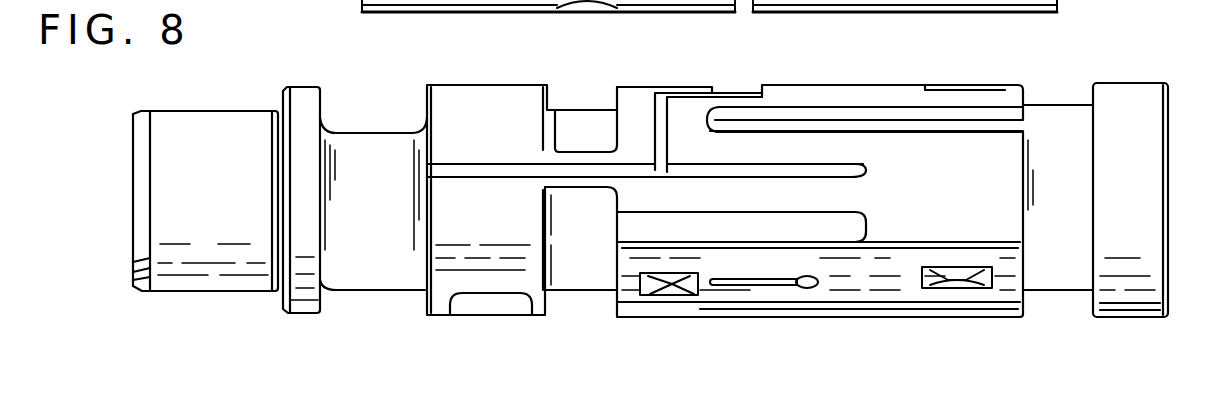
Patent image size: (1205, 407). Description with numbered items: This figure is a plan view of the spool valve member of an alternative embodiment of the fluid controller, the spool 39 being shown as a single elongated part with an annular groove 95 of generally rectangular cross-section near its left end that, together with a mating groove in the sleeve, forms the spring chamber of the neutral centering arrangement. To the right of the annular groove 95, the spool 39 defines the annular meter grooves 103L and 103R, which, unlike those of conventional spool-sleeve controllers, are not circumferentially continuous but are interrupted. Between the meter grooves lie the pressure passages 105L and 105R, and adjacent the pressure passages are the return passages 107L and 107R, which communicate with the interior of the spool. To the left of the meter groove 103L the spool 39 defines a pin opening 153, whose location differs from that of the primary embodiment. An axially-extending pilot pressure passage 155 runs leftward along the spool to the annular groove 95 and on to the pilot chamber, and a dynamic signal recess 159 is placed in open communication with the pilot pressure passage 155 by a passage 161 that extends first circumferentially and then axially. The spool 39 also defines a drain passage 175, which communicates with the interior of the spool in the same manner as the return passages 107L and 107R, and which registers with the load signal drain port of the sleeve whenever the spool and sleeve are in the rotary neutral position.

The spool 39 is at (356, 73).
The annular groove 95 is at (397, 132).
The annular meter groove 103L is at (580, 272).
The annular meter groove 103R is at (1055, 270).
The pressure passage 105L is at (840, 226).
The pressure passage 105R is at (850, 115).
The return passage 107L is at (673, 290).
The return passage 107R is at (960, 268).
The pin opening 153 is at (490, 302).
The pilot pressure passage 155 is at (527, 172).
The dynamic signal recess 159 is at (740, 85).
The passage 161 is at (658, 128).
The drain passage 175 is at (755, 290).